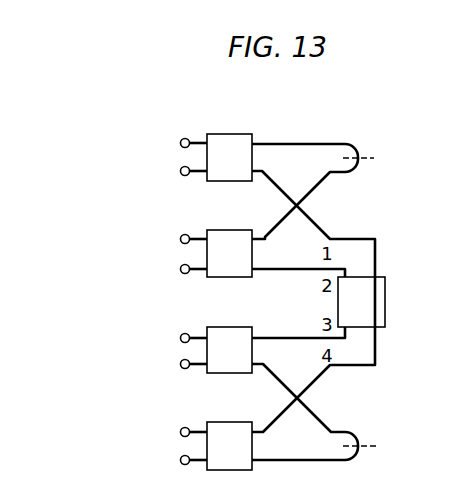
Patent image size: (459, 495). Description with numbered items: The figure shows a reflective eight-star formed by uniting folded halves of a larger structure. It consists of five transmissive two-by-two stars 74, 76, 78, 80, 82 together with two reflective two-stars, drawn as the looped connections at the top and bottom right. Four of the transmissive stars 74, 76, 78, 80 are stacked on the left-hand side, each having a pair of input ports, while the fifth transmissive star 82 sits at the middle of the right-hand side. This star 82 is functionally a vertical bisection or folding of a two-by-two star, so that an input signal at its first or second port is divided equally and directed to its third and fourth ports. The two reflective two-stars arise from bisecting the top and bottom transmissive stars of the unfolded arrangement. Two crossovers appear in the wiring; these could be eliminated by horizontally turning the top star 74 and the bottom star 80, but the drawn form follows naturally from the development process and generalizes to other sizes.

The transmissive 2×2 star 74 is at (237, 143).
The transmissive 2×2 star 76 is at (222, 236).
The transmissive 2×2 star 78 is at (222, 334).
The transmissive 2×2 star 80 is at (218, 428).
The transmissive 2×2 star 82 is at (380, 293).